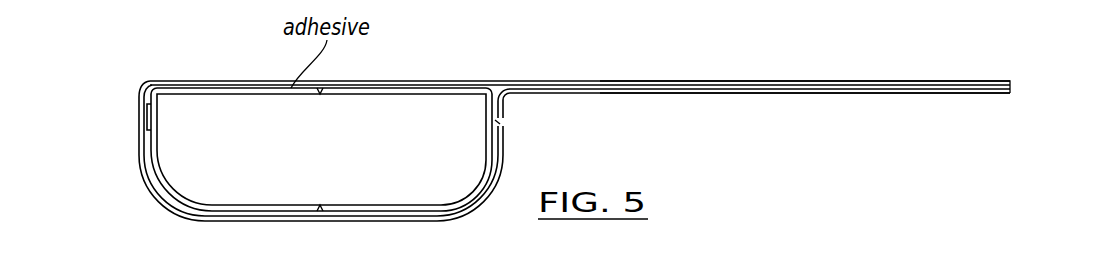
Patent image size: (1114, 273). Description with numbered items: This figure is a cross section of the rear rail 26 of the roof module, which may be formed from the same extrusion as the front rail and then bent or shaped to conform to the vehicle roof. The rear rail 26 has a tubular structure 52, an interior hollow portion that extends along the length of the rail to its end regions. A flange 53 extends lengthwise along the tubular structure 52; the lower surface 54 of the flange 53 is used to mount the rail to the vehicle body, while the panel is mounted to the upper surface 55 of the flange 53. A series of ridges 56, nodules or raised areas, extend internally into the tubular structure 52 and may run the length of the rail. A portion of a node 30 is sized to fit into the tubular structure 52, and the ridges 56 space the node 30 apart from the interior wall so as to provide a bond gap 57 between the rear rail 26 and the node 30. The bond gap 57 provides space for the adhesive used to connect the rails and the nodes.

The rear rail 26 is at (1025, 60).
The node 30 is at (233, 170).
The tubular structure 52 is at (215, 89).
The flange 53 is at (898, 83).
The lower surface 54 is at (863, 94).
The upper surface 55 is at (822, 82).
The ridges 56 is at (320, 95).
The bond gap 57 is at (148, 133).